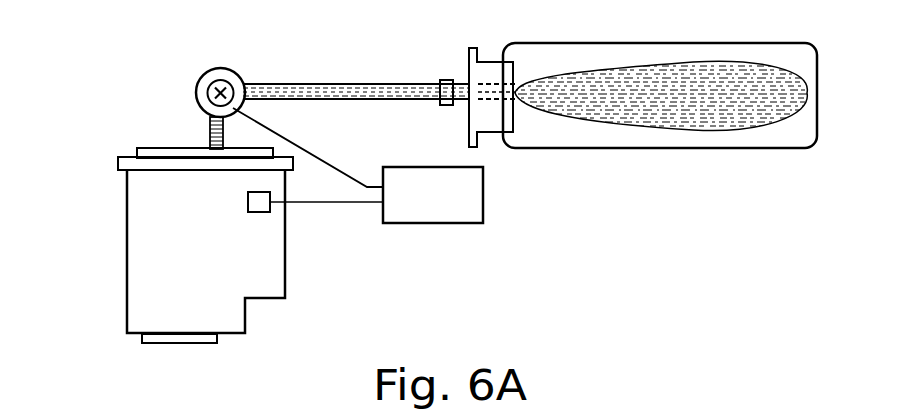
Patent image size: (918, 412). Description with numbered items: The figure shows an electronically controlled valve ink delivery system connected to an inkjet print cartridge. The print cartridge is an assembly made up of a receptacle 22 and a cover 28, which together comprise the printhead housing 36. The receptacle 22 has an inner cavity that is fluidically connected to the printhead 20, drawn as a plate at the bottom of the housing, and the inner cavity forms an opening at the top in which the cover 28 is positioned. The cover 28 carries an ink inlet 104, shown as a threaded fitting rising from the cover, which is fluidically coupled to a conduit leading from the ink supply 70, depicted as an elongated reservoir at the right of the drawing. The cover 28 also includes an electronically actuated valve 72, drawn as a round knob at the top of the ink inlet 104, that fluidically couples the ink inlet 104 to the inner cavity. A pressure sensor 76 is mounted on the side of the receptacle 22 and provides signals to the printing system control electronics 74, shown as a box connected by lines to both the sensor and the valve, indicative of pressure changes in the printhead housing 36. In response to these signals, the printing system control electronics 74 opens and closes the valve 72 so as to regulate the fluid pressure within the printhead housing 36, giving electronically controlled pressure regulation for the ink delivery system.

The printhead 20 is at (197, 343).
The receptacle 22 is at (267, 270).
The cover 28 is at (127, 155).
The printhead housing 36 is at (265, 313).
The ink supply 70 is at (698, 104).
The electronically actuated valve 72 is at (207, 87).
The printing system control electronics 74 is at (448, 208).
The pressure sensor 76 is at (270, 210).
The ink inlet 104 is at (210, 147).